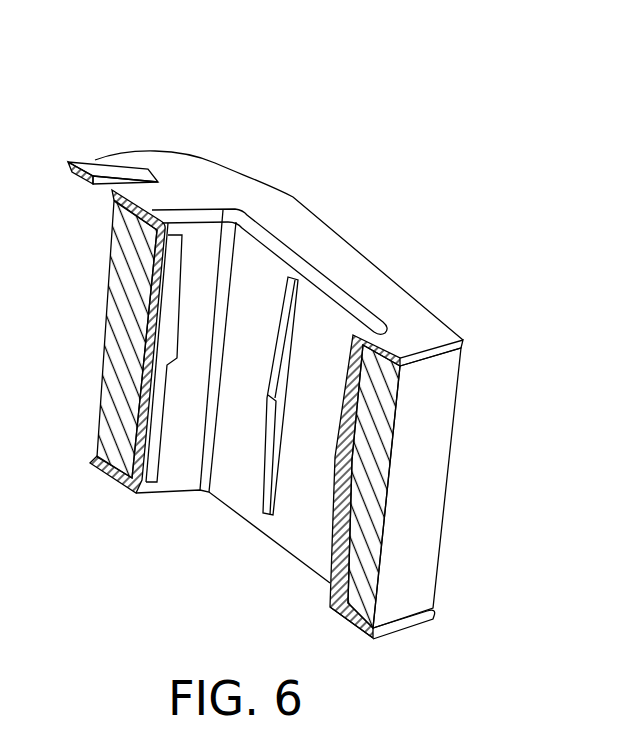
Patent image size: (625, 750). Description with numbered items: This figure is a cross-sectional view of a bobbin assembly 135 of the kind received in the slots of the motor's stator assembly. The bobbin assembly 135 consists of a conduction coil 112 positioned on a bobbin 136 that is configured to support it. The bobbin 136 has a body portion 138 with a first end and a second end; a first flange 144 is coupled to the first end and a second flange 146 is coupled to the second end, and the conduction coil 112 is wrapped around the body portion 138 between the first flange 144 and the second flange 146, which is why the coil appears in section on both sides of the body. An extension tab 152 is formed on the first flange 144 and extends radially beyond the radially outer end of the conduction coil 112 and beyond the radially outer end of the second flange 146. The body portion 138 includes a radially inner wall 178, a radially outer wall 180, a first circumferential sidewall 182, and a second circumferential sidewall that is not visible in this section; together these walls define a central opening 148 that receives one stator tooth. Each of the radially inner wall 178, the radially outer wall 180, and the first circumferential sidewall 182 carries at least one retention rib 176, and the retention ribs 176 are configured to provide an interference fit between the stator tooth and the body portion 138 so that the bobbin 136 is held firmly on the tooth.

The conduction coil 112 is at (120, 260).
The bobbin assembly 135 is at (284, 385).
The bobbin 136 is at (423, 317).
The body portion 138 is at (248, 257).
The first flange 144 is at (445, 333).
The second flange 146 is at (417, 632).
The central opening 148 is at (212, 228).
The extension tab 152 is at (130, 165).
The retention rib 176 is at (160, 335).
The radially inner wall 178 is at (347, 612).
The radially outer wall 180 is at (165, 476).
The first circumferential sidewall 182 is at (339, 318).